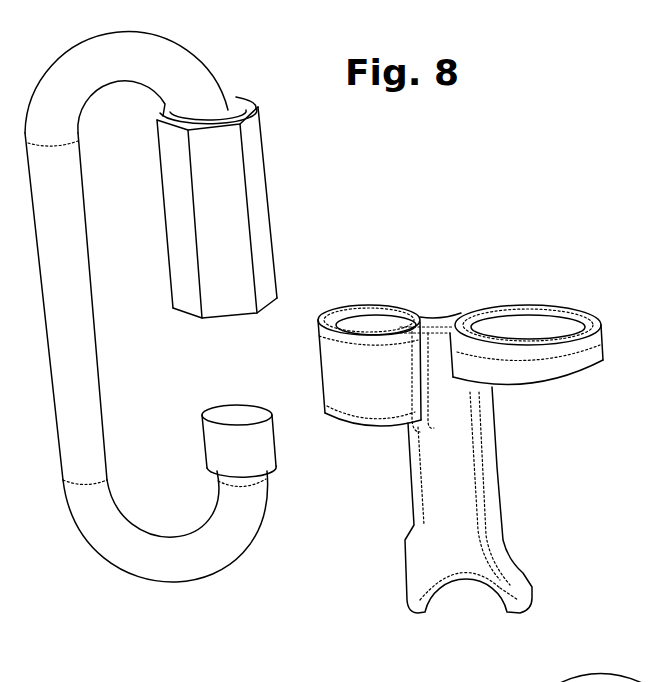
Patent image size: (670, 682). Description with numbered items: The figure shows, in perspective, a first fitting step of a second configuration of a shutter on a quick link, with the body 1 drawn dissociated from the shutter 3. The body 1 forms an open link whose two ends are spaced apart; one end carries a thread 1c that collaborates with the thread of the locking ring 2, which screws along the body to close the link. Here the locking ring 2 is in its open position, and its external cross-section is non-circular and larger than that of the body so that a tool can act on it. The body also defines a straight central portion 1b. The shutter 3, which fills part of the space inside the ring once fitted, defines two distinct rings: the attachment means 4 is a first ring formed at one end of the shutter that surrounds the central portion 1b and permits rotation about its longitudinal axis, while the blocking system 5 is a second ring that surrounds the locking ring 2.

The body 1 is at (181, 332).
The straight portion 1b is at (125, 62).
The thread 1c is at (247, 445).
The locking ring 2 is at (243, 138).
The shutter 3 is at (478, 423).
The attachment means 4 is at (369, 320).
The blocking system 5 is at (536, 318).